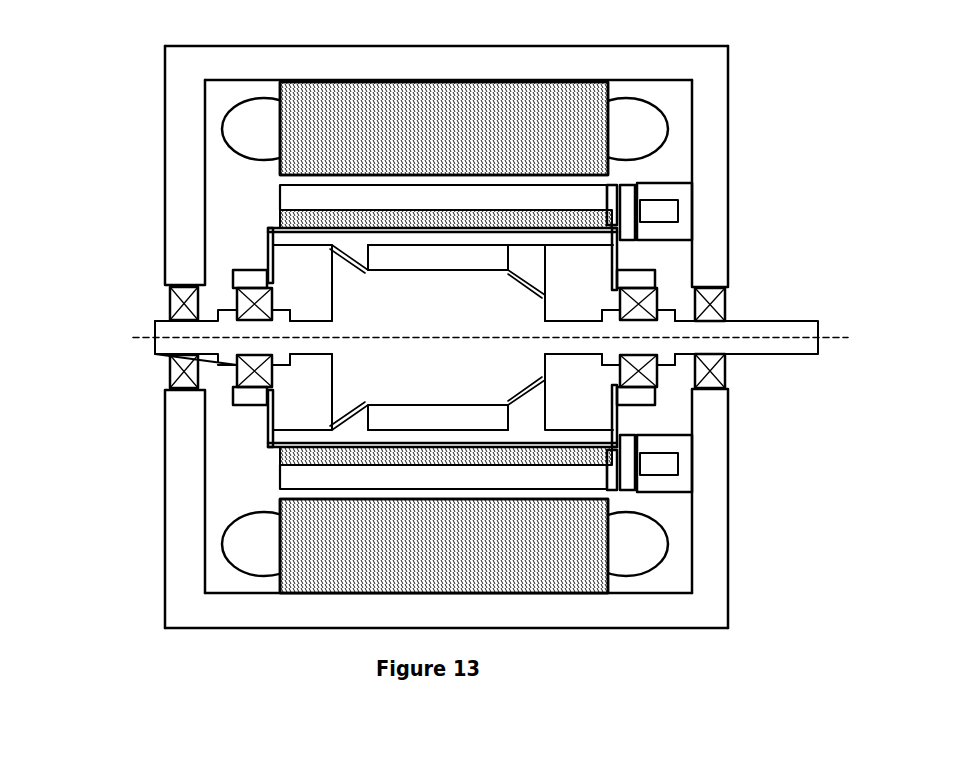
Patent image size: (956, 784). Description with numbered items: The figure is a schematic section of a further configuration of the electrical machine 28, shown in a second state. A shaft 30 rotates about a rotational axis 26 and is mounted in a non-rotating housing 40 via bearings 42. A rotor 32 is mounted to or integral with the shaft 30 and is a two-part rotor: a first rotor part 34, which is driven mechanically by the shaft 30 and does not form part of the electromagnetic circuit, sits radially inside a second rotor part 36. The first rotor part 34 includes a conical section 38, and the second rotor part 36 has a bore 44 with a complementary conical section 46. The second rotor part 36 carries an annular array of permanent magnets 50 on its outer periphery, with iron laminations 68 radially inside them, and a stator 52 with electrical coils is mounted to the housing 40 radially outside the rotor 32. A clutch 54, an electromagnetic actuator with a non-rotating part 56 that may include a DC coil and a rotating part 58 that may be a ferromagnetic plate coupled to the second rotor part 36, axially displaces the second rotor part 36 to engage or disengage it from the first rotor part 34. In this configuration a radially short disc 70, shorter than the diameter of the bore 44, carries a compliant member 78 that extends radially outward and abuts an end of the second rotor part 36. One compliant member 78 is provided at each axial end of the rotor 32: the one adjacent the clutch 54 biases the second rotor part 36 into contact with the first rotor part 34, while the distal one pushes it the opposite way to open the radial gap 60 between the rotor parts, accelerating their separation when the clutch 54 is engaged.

The rotational axis 26 is at (767, 340).
The electrical machine 28 is at (95, 85).
The shaft 30 is at (167, 340).
The rotor 32 is at (222, 185).
The first rotor part 34 is at (403, 382).
The second rotor part 36 is at (537, 257).
The conical section 38 is at (338, 265).
The housing 40 is at (163, 165).
The bearings 42 is at (165, 295).
The bore 44 is at (443, 244).
The conical section of the bore 46 is at (348, 250).
The permanent magnets 50 is at (550, 190).
The stator 52 is at (373, 113).
The clutch 54 is at (627, 492).
The non-rotating part 56 is at (715, 208).
The rotating part 58 is at (630, 193).
The radial gap 60 is at (503, 398).
The iron laminations 68 is at (340, 217).
The disc 70 is at (250, 394).
The compliant member 78 is at (273, 418).